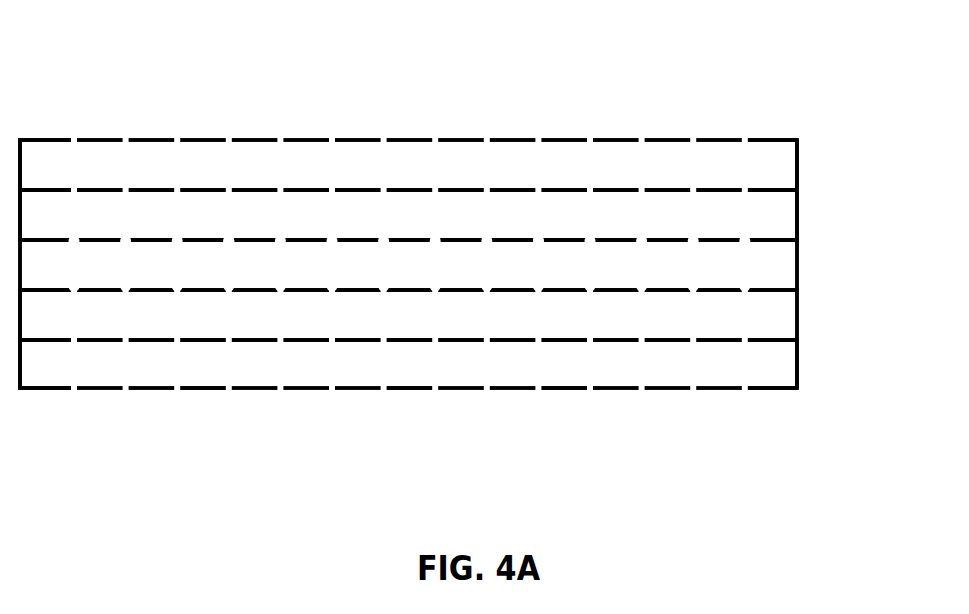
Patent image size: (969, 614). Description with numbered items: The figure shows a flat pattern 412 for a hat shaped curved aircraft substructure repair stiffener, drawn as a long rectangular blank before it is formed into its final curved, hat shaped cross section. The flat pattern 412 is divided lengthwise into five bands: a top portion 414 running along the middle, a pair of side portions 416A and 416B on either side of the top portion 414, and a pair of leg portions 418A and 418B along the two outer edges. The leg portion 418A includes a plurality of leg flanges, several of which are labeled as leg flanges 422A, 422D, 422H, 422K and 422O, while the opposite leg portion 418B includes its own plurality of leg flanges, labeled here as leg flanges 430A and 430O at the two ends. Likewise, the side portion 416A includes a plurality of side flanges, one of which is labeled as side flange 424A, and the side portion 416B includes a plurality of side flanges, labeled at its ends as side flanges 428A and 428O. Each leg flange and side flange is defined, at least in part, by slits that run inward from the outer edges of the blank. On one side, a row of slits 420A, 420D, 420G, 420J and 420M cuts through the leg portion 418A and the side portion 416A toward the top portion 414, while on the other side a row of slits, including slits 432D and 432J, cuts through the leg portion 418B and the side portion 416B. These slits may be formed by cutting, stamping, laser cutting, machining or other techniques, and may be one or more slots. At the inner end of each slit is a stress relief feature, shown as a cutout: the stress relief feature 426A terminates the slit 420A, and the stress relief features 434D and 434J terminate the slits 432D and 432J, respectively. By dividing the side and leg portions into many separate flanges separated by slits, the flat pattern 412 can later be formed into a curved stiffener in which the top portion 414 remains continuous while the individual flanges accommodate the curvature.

The flat pattern 412 is at (165, 75).
The top portion 414 is at (802, 265).
The side portion 416A is at (802, 313).
The side portion 416B is at (802, 215).
The leg portion 418A is at (802, 362).
The leg portion 418B is at (802, 165).
The slit 420A is at (76, 380).
The slit 420D is at (233, 382).
The slit 420G is at (388, 380).
The slit 420J is at (545, 380).
The slit 420M is at (693, 380).
The leg flange 422A is at (45, 372).
The leg flange 422D is at (202, 372).
The leg flange 422H is at (413, 365).
The leg flange 422K is at (570, 348).
The leg flange 422O is at (773, 365).
The side flange 424A is at (34, 322).
The stress relief feature 426A is at (75, 288).
The side flange 428A is at (52, 220).
The side flange 428O is at (773, 220).
The leg flange 430A is at (35, 158).
The leg flange 430O is at (782, 172).
The slit 432D is at (234, 140).
The slit 432J is at (545, 140).
The stress relief feature 434D is at (232, 250).
The stress relief feature 434J is at (535, 235).